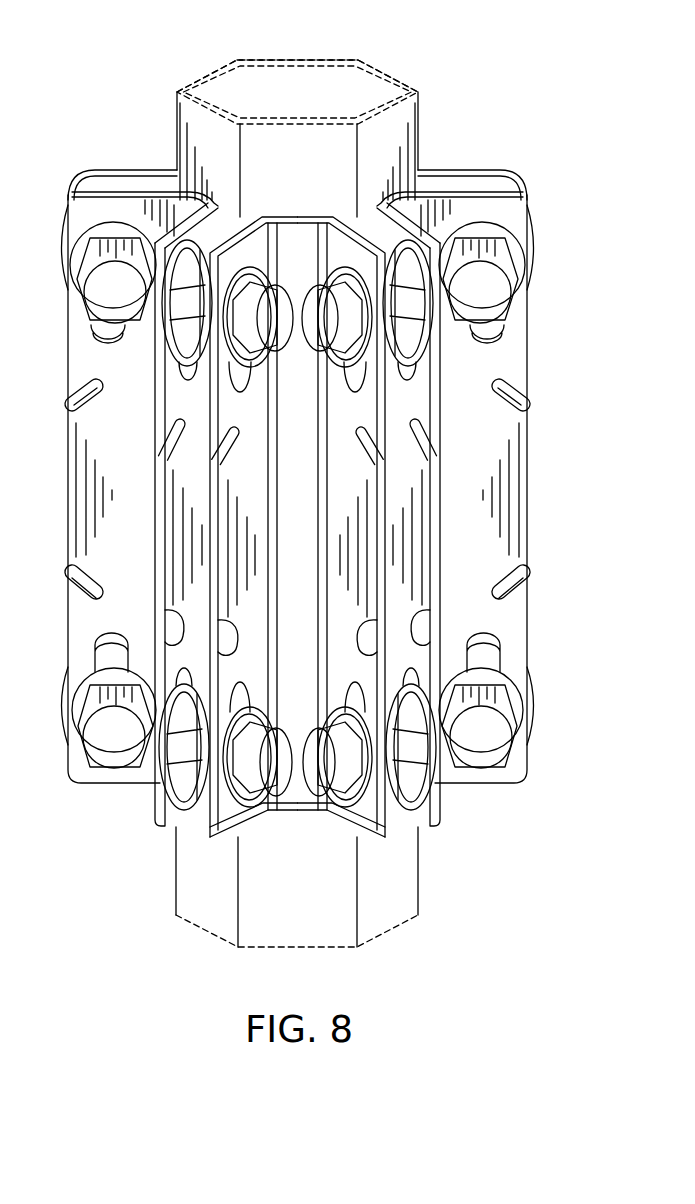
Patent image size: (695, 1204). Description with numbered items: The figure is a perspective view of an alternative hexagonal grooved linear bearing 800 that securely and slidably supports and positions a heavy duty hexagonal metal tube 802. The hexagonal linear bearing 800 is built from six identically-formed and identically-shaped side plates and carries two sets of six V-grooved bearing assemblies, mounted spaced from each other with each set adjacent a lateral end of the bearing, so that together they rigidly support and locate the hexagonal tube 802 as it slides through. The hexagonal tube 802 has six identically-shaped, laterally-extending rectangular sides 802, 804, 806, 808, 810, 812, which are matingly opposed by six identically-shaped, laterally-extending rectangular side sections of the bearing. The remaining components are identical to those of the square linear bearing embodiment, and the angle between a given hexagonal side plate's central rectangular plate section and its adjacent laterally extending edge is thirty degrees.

The hexagonal linear bearing 800 is at (334, 478).
The hexagonal tube 802 is at (392, 117).
The rectangular side 804 is at (280, 138).
The rectangular side 806 is at (200, 117).
The rectangular side 808 is at (217, 68).
The rectangular side 810 is at (292, 50).
The rectangular side 812 is at (368, 62).